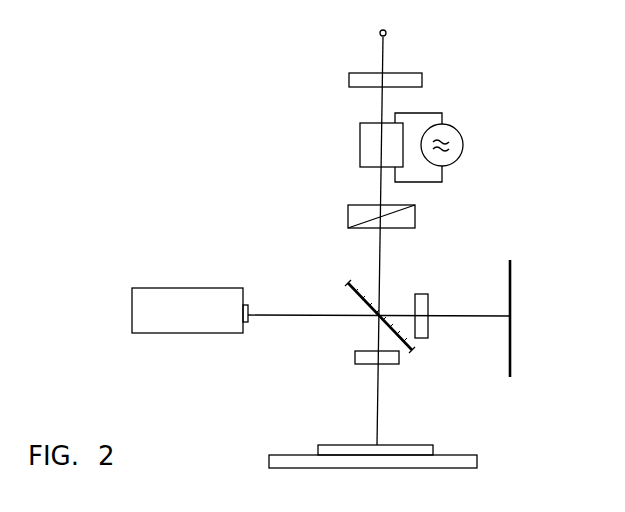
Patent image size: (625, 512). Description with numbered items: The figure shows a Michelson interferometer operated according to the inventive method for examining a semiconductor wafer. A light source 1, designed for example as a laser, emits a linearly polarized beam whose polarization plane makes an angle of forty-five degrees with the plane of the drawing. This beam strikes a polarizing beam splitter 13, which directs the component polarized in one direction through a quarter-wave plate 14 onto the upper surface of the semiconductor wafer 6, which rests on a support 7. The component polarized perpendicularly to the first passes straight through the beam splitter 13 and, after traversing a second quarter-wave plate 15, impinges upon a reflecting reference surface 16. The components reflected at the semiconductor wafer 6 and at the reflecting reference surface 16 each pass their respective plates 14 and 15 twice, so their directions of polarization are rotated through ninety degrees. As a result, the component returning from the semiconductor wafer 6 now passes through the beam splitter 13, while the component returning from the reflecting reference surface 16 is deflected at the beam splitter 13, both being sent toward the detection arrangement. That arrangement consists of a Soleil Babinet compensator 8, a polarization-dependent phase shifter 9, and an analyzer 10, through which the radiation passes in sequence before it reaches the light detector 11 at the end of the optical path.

The light source 1 is at (233, 301).
The semiconductor wafer 6 is at (425, 450).
The support 7 is at (450, 462).
The Soleil Babinet compensator 8 is at (415, 218).
The polarization-dependent phase shifter 9 is at (366, 140).
The analyzer 10 is at (422, 82).
The light detector 11 is at (386, 33).
The polarizing beam splitter 13 is at (412, 349).
The λ/4 plate 14 is at (399, 358).
The λ/4 plate 15 is at (428, 300).
The reflecting reference surface 16 is at (512, 275).